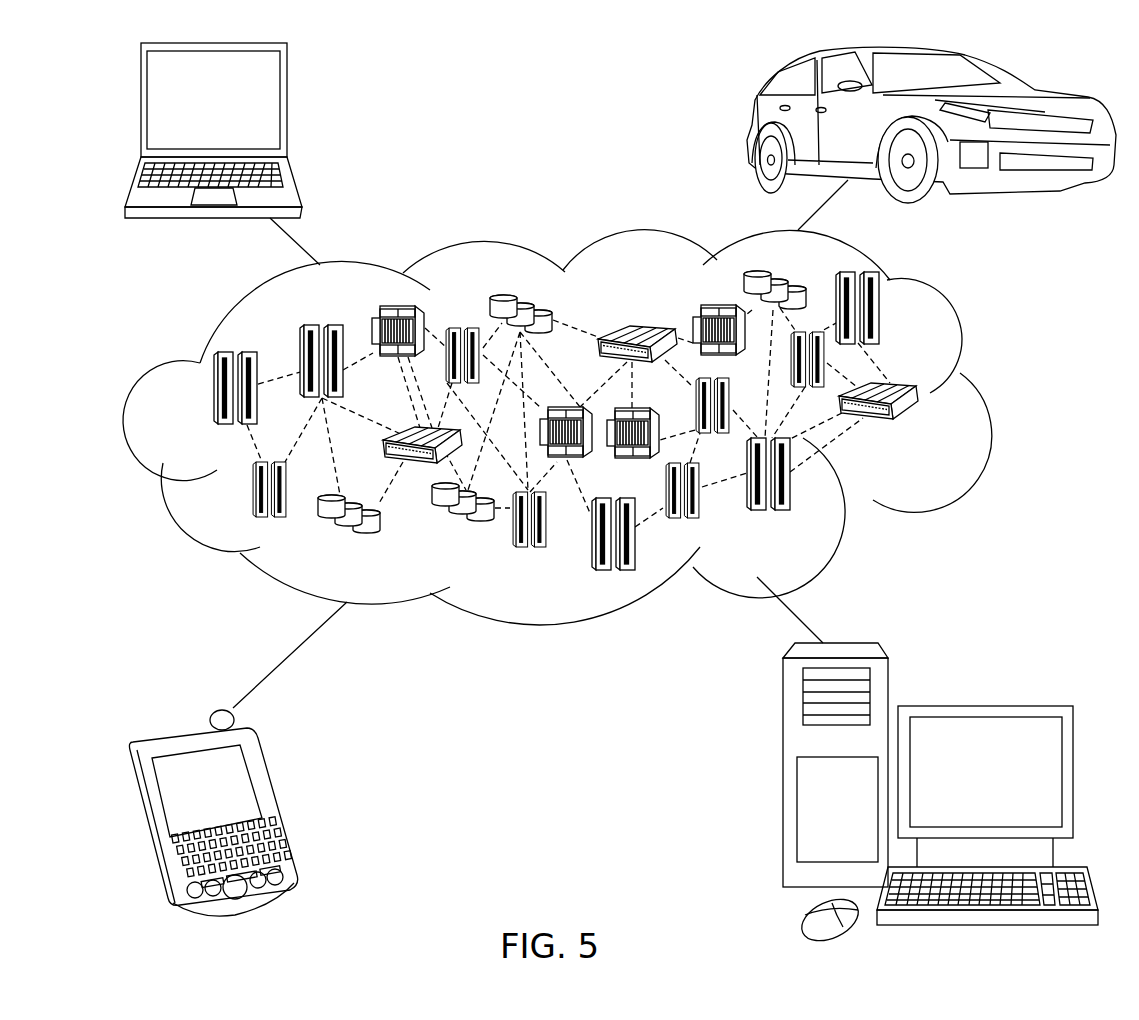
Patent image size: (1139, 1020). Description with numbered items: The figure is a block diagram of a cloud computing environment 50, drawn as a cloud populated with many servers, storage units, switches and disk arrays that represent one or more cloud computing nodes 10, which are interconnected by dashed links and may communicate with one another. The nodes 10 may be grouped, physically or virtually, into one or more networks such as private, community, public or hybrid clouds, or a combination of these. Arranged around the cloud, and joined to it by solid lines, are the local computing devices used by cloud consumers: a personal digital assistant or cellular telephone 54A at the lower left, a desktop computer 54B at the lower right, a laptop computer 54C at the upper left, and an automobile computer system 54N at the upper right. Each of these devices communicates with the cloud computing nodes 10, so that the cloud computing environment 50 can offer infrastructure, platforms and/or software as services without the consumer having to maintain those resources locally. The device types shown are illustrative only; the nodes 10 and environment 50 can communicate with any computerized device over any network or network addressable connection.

The cloud computing node 10 is at (940, 433).
The cloud computing environment 50 is at (985, 400).
The personal digital assistant or cellular telephone 54A is at (275, 803).
The desktop computer 54B is at (982, 705).
The laptop computer 54C is at (287, 108).
The automobile computer system 54N is at (750, 122).